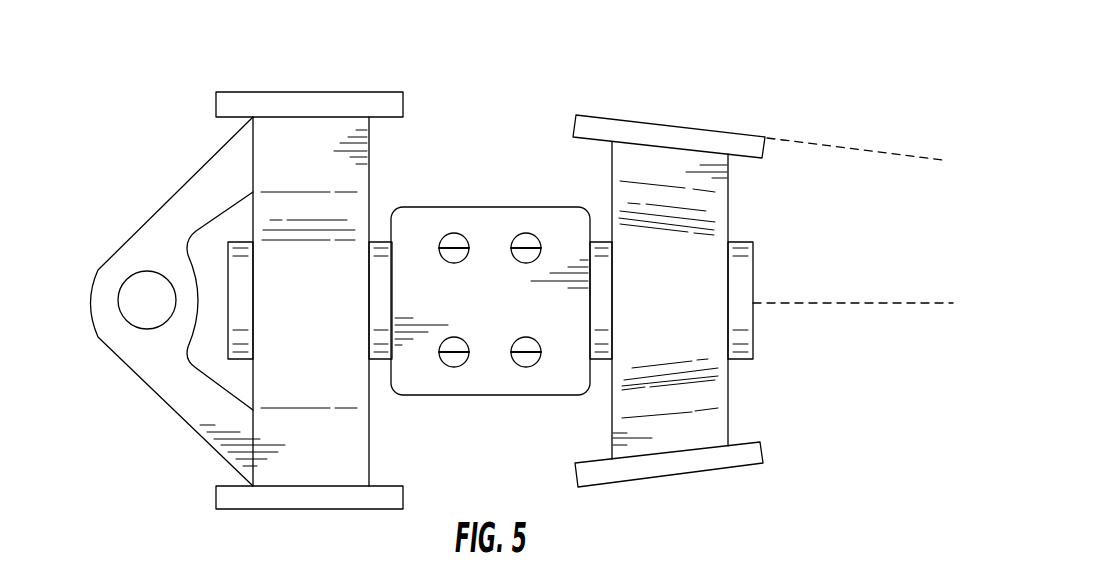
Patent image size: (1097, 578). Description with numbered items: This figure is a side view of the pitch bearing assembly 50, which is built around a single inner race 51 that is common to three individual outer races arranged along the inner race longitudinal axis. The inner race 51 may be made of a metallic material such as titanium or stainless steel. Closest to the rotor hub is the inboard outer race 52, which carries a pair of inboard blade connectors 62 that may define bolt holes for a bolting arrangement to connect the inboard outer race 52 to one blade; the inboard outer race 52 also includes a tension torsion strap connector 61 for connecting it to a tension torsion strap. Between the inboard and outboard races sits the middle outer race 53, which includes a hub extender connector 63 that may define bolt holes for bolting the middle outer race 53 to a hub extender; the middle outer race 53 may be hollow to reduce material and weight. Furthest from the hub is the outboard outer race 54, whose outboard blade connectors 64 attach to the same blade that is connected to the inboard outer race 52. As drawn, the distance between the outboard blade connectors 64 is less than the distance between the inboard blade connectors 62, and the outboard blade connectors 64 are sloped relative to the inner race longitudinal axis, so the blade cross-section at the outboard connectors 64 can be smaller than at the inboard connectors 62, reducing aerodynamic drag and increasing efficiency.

The pitch bearing assembly 50 is at (147, 73).
The single inner race 51 is at (742, 250).
The inboard outer race 52 is at (355, 177).
The middle outer race 53 is at (463, 218).
The outboard outer race 54 is at (630, 193).
The tension torsion strap connector 61 is at (107, 278).
The inboard blade connectors 62 is at (297, 92).
The hub extender connector 63 is at (523, 240).
The outboard blade connectors 64 is at (683, 125).